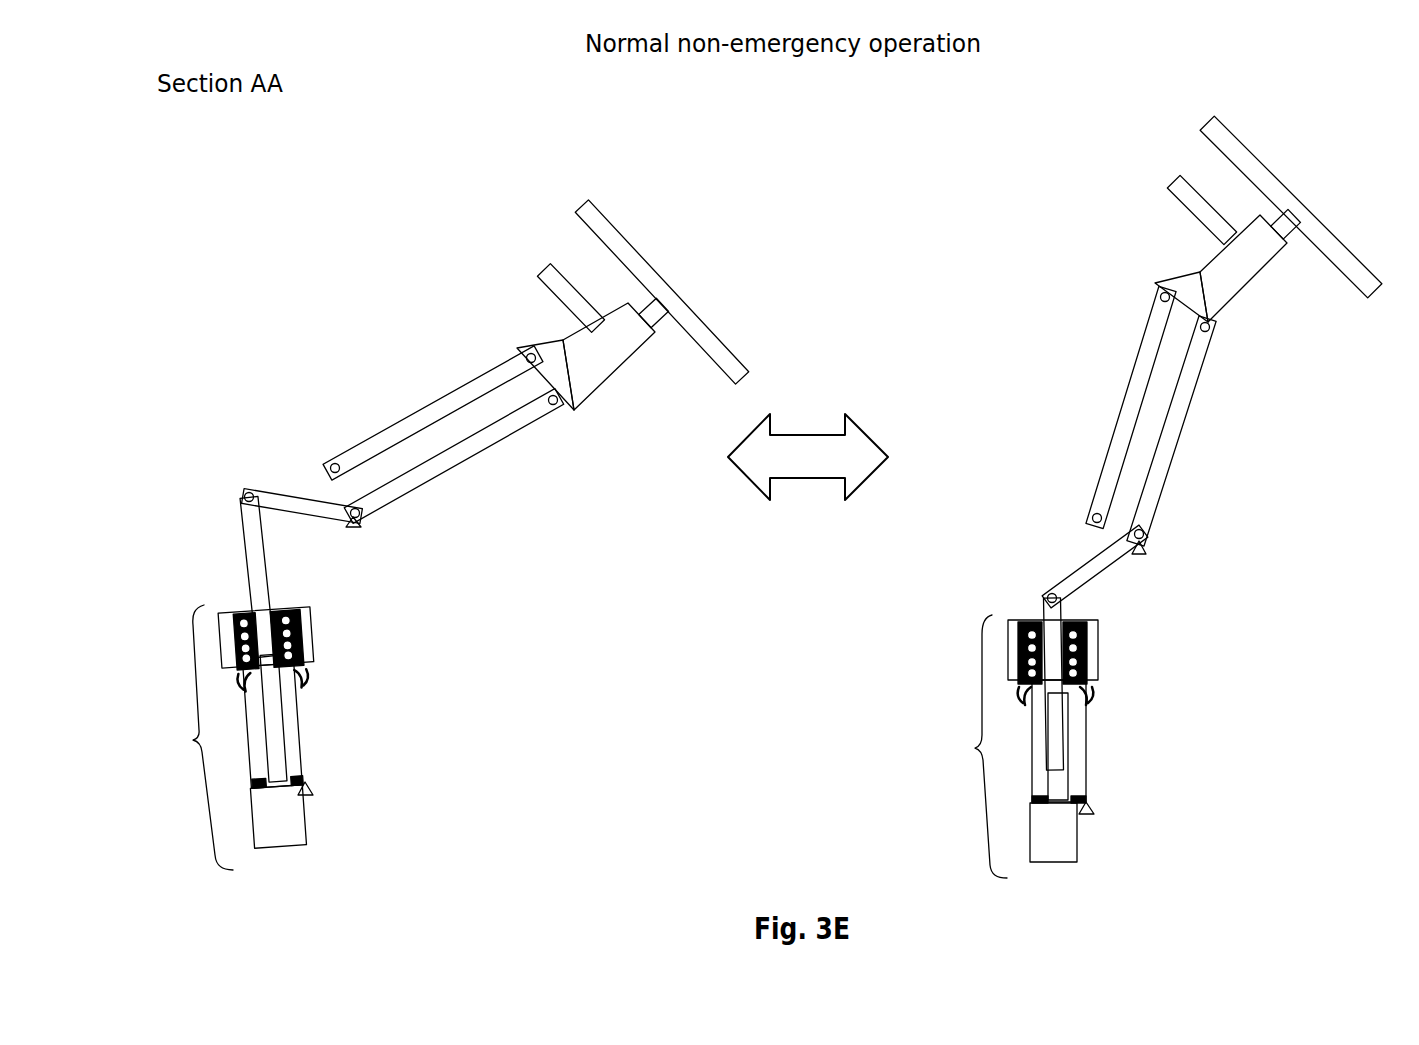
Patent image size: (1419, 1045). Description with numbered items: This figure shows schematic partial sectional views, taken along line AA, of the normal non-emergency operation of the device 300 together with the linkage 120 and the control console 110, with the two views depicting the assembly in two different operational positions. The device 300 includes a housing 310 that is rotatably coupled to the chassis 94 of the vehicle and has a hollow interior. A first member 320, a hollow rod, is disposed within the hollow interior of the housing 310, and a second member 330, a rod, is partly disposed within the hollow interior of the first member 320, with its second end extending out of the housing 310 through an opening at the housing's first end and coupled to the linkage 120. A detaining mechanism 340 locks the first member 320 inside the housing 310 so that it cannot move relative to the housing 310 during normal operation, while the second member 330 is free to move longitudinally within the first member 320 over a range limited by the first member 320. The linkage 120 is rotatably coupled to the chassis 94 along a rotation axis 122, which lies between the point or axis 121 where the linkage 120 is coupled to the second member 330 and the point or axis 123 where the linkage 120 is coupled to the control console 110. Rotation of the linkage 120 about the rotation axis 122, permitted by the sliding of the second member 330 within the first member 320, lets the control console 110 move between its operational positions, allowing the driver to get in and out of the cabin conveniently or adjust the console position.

The control console 110 is at (561, 221).
The linkage 120 is at (441, 470).
The point or axis at which linkage is coupled to second member 121 is at (246, 490).
The rotation axis 122 is at (360, 517).
The point or axis at which linkage is coupled to control console 123 is at (556, 406).
The chassis 94 is at (361, 526).
The device 300 is at (200, 54).
The housing 310 is at (303, 722).
The first member 320 is at (292, 777).
The second member 330 is at (268, 585).
The detaining mechanism 340 is at (322, 616).